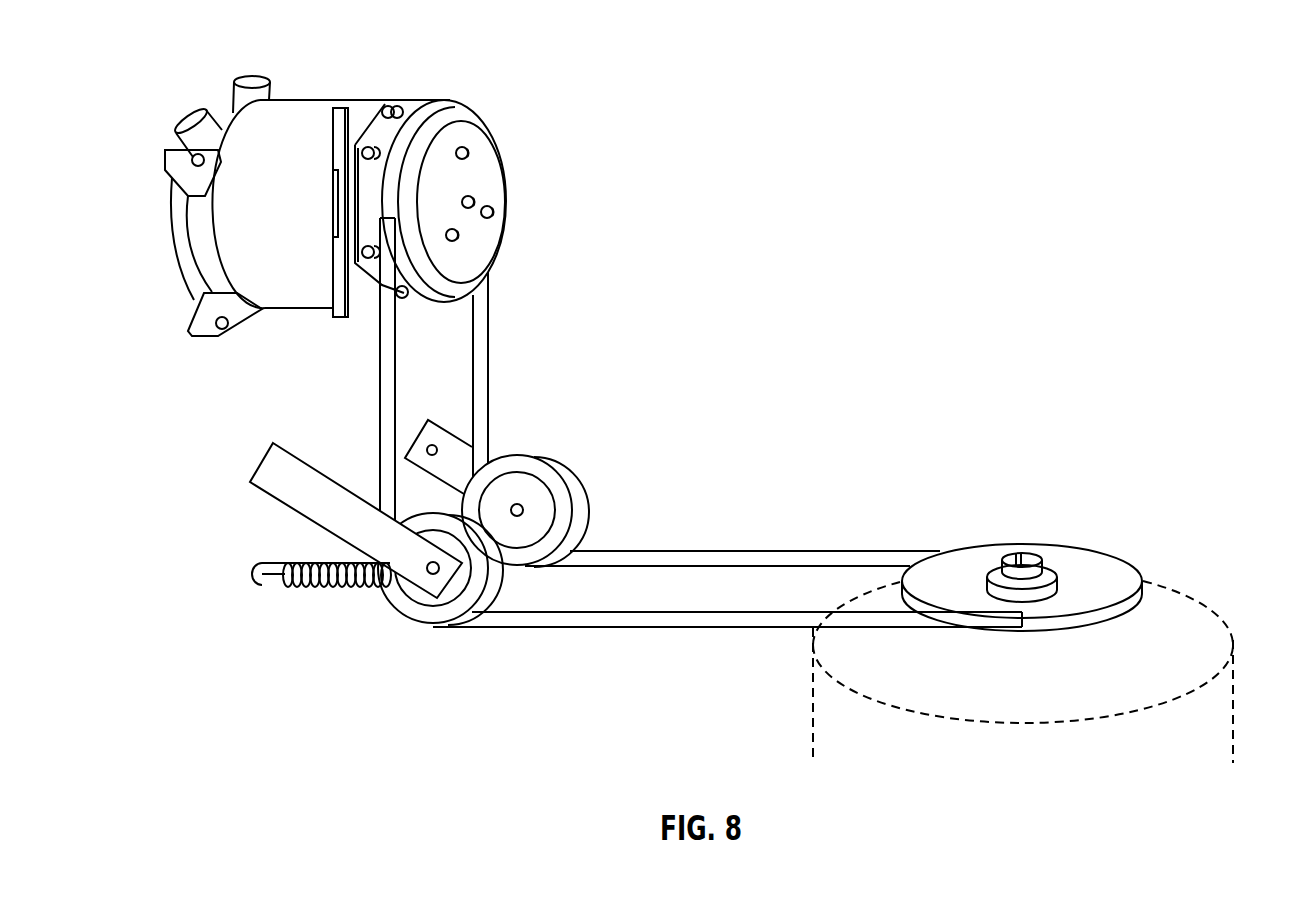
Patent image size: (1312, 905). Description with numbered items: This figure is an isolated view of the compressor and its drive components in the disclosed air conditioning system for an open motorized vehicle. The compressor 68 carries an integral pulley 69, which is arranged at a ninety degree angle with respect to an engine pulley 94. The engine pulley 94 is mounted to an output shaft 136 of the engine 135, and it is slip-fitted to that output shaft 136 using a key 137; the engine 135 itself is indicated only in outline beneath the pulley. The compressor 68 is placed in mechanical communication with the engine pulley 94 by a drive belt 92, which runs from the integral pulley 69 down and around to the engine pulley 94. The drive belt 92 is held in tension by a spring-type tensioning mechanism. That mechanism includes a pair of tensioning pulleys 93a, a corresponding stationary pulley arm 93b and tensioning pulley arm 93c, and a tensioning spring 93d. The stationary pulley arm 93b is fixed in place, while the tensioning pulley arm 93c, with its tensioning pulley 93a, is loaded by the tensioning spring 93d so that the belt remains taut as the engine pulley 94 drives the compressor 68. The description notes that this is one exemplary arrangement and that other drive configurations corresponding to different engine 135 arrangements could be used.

The compressor 68 is at (343, 99).
The integral pulley 69 is at (488, 180).
The drive belt 92 is at (390, 379).
The tensioning pulleys 93a is at (475, 555).
The stationary pulley arm 93b is at (413, 437).
The tensioning pulley arm 93c is at (263, 460).
The tensioning spring 93d is at (290, 588).
The engine pulley 94 is at (1065, 556).
The engine 135 is at (1187, 592).
The output shaft 136 is at (1022, 548).
The key 137 is at (1014, 577).